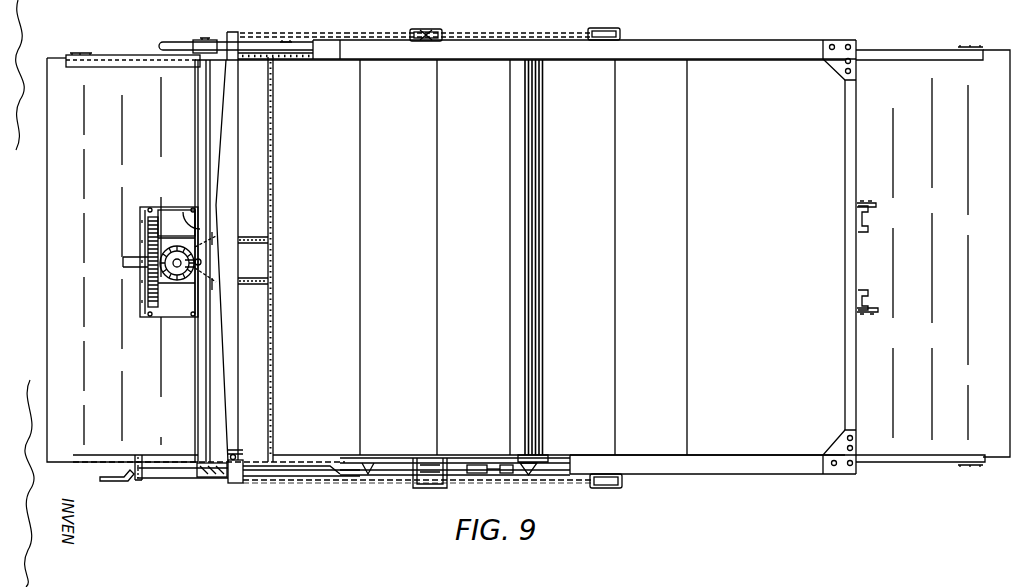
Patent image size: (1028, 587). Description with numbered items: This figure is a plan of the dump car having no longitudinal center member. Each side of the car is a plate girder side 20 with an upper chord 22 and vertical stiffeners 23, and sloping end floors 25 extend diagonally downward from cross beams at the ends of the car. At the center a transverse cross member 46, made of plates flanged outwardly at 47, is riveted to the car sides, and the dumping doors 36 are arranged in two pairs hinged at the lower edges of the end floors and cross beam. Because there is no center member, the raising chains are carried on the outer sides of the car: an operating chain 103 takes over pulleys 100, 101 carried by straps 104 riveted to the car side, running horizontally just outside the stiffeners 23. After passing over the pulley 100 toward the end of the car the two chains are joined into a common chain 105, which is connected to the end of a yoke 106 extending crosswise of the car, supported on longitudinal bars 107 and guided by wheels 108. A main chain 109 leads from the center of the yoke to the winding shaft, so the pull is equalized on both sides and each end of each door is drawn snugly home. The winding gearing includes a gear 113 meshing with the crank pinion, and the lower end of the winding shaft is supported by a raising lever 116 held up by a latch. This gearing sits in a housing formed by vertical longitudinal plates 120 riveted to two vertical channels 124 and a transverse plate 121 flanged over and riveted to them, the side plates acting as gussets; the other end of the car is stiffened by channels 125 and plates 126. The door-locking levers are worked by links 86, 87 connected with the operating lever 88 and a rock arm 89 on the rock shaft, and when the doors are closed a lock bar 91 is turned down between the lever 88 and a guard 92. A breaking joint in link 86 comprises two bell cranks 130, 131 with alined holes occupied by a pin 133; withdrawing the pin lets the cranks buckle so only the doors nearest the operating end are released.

The plate girder side 20 is at (293, 58).
The upper chord 22 is at (584, 257).
The vertical stiffeners 23 is at (372, 472).
The sloping end floors 25 is at (274, 105).
The dumping doors 36 is at (523, 257).
The cross member 46 is at (535, 299).
The outward flanges 47 is at (546, 460).
The link 86 is at (330, 478).
The link 87 is at (270, 478).
The operating lever 88 is at (129, 484).
The rock arm 89 is at (182, 50).
The lock bar 91 is at (141, 480).
The guard 92 is at (182, 480).
The pulley 100 is at (440, 34).
The pulley 101 is at (610, 31).
The operating chain 103 is at (506, 36).
The straps 104 is at (412, 35).
The common chain 105 is at (287, 33).
The yoke 106 is at (226, 195).
The longitudinal bars 107 is at (253, 66).
The wheels 108 is at (236, 456).
The main chain 109 is at (204, 265).
The gear 113 is at (169, 262).
The raising lever 116 is at (124, 266).
The vertical longitudinal plates 120 is at (159, 207).
The vertical transverse plate 121 is at (146, 227).
The vertical channels 124 is at (182, 209).
The channels 125 is at (868, 215).
The plates 126 is at (872, 206).
The bell crank 130 is at (458, 474).
The bell crank 131 is at (504, 480).
The pin 133 is at (476, 474).